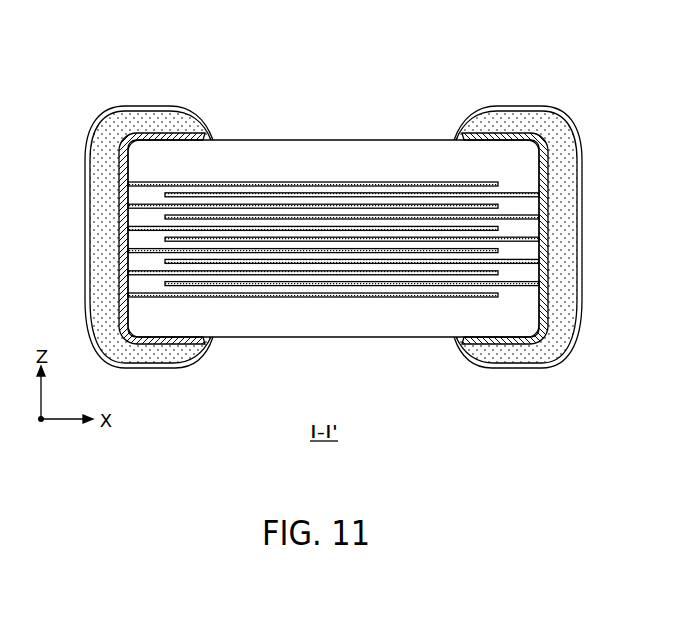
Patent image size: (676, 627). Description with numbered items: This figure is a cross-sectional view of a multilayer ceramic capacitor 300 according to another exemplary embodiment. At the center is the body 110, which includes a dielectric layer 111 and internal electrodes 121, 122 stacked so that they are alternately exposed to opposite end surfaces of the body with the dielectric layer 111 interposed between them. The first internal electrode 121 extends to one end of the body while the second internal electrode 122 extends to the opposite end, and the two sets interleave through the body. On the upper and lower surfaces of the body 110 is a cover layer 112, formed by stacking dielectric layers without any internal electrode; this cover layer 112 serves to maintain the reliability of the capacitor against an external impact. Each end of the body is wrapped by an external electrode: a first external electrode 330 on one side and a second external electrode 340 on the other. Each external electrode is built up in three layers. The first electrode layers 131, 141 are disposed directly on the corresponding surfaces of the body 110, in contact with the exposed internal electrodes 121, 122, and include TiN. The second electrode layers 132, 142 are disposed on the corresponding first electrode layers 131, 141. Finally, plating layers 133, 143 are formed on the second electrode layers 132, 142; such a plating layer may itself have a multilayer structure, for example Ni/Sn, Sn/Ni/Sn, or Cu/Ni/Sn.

The multilayer capacitor 300 is at (297, 33).
The body 110 is at (360, 140).
The dielectric layer 111 is at (262, 192).
The cover layer 112 is at (315, 152).
The first internal electrode 121 is at (217, 183).
The second internal electrode 122 is at (427, 194).
The first electrode layer 131 is at (162, 270).
The second electrode layer 132 is at (173, 353).
The plating layer 133 is at (207, 350).
The first electrode layer 141 is at (505, 270).
The second electrode layer 142 is at (493, 353).
The second plating layer 143 is at (460, 350).
The first external electrode 330 is at (169, 272).
The second external electrode 340 is at (498, 272).